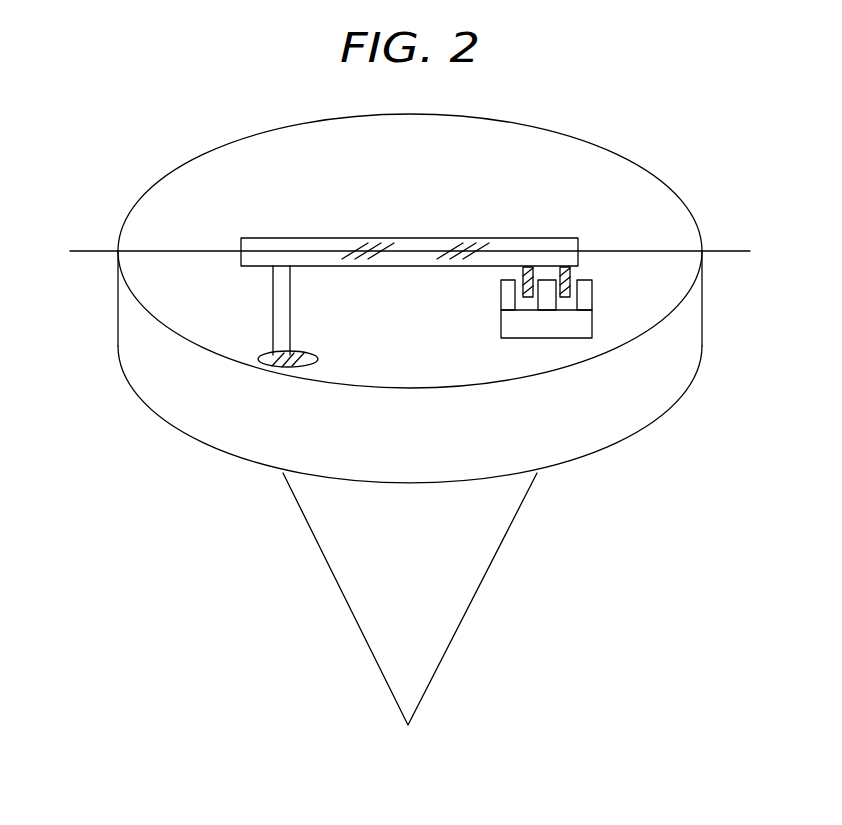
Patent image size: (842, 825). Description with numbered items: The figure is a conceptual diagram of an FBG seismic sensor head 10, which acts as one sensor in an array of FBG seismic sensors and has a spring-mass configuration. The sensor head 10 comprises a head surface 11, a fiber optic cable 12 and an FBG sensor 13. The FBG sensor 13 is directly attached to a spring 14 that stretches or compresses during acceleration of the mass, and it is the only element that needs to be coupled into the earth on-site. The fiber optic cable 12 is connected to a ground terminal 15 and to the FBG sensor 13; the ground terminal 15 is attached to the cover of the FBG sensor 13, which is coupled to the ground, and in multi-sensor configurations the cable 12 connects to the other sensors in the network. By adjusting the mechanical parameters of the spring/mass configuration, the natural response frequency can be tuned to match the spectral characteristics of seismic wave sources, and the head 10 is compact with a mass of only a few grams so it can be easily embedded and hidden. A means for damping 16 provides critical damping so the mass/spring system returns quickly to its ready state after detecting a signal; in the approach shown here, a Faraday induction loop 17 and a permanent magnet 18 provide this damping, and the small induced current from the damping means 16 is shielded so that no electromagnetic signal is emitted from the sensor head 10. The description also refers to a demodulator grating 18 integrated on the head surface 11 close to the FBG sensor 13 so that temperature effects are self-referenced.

The FBG sensor head 10 is at (761, 104).
The head surface 11 is at (637, 305).
The fiber optic cable 12 is at (90, 251).
The FBG sensor 13 is at (372, 245).
The spring 14 is at (288, 238).
The ground terminal 15 is at (273, 312).
The means for damping 16 is at (585, 327).
The Faraday induction loop 17 is at (578, 268).
The permanent magnet 18 is at (470, 245).